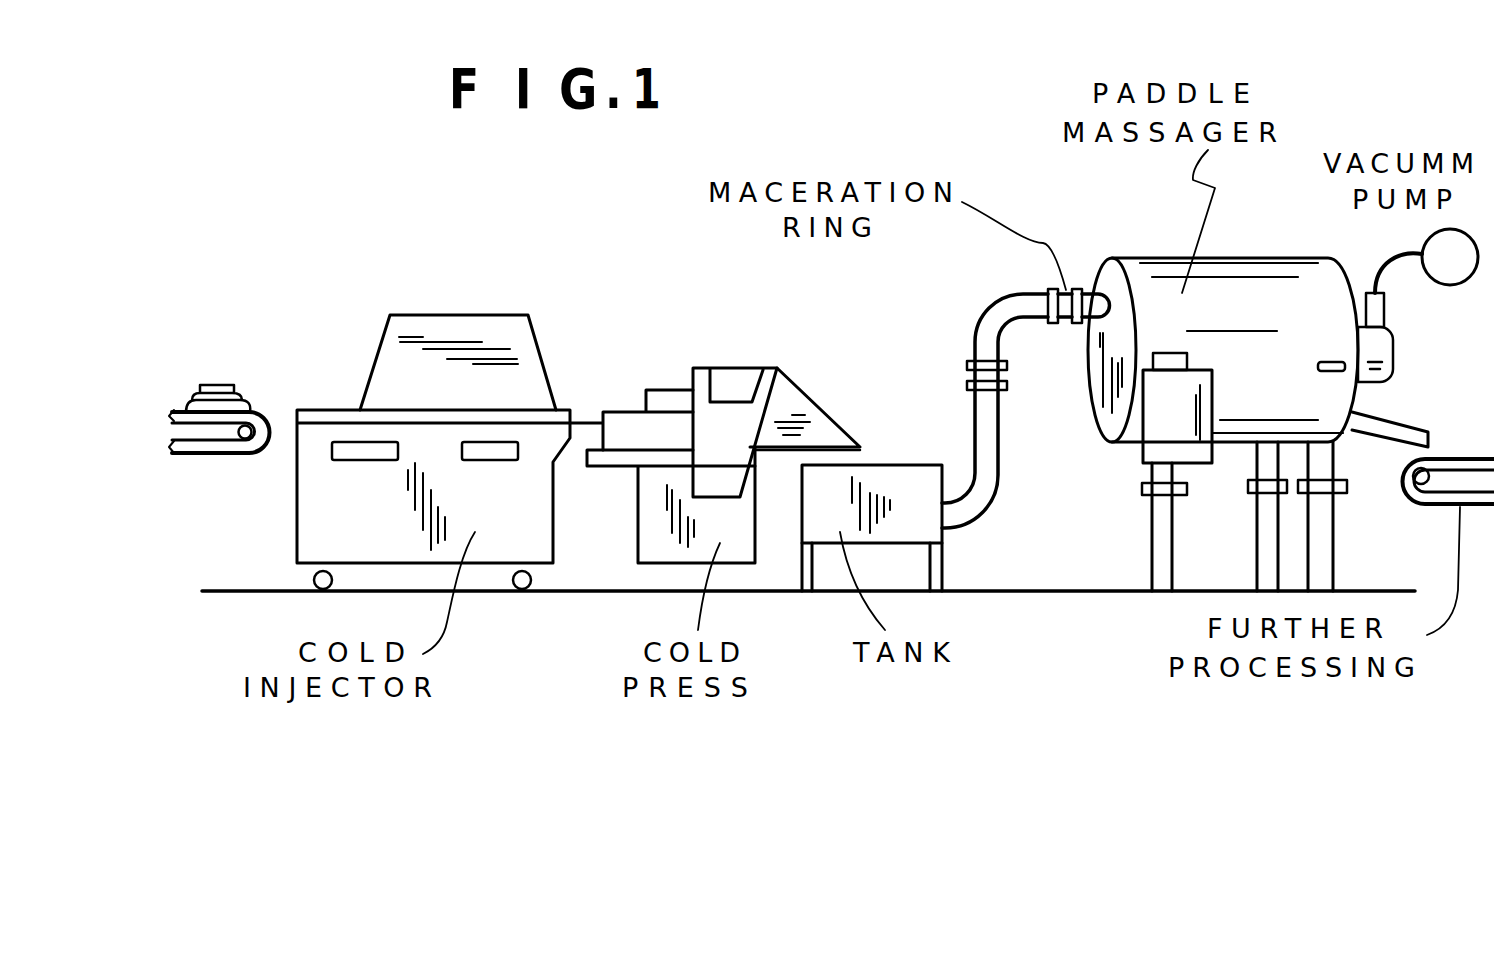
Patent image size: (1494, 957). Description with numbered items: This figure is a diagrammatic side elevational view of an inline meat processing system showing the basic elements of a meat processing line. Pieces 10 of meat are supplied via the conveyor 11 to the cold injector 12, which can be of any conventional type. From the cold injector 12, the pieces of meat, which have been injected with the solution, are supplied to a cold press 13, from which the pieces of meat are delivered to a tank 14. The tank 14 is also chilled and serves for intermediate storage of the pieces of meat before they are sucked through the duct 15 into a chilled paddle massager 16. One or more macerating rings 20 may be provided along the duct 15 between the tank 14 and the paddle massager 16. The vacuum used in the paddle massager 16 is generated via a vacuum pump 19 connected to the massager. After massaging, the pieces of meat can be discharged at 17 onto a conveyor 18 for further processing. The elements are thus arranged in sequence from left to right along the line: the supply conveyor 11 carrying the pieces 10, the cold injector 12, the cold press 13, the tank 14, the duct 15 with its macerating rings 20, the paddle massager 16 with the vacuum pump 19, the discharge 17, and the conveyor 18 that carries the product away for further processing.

The pieces of meat 10 is at (226, 385).
The conveyor 11 is at (218, 454).
The cold injector 12 is at (478, 327).
The cold press 13 is at (727, 427).
The tank 14 is at (885, 478).
The duct 15 is at (987, 447).
The paddle massager 16 is at (1240, 424).
The discharge 17 is at (1393, 429).
The conveyor 18 is at (1458, 459).
The vacuum pump 19 is at (1419, 243).
The macerating rings 20 is at (968, 382).